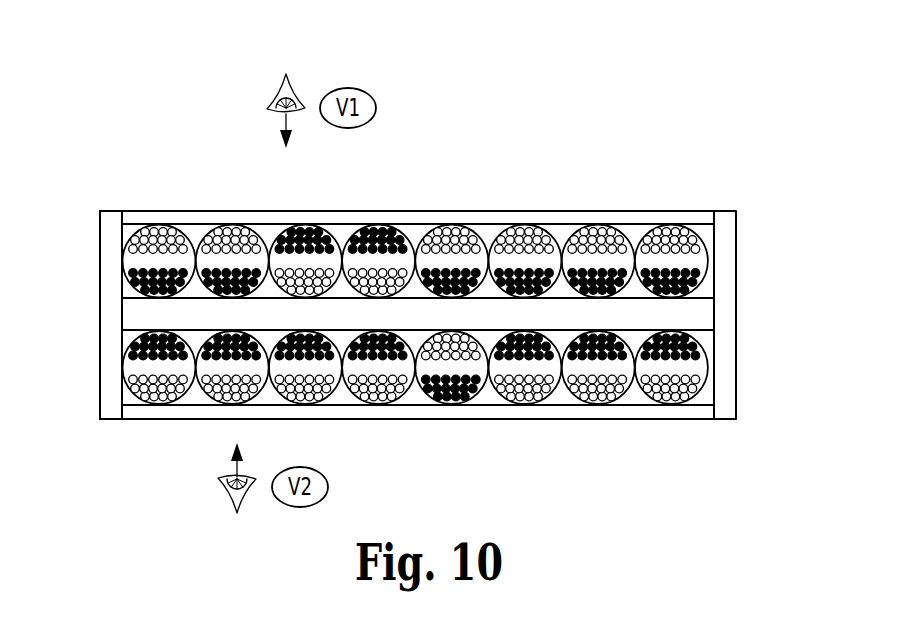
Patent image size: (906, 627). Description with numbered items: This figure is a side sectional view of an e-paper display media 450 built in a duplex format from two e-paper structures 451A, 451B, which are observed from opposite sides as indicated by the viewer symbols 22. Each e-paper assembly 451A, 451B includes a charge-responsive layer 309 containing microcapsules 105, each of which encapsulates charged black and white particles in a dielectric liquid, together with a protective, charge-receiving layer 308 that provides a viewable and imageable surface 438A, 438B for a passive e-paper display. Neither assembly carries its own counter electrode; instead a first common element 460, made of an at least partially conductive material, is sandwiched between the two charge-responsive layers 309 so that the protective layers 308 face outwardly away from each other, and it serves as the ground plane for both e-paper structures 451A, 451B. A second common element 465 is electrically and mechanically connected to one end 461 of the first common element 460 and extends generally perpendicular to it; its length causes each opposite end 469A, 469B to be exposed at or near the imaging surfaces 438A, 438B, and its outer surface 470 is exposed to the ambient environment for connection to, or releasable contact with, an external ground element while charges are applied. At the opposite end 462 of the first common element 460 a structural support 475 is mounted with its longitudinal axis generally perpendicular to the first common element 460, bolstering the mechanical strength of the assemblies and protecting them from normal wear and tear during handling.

The viewer / observer eye 22 is at (297, 92).
The microcapsule 105 is at (642, 392).
The protective, charge-receiving layer 308 is at (553, 217).
The charge-responsive layer 309 is at (707, 262).
The viewable and imageable surface 438A is at (418, 211).
The viewable and imageable surface 438B is at (508, 420).
The e-paper display media 450 is at (95, 178).
The e-paper structure 451A is at (708, 233).
The e-paper structure 451B is at (703, 342).
The first common element 460 is at (690, 317).
The first particles 461 is at (191, 337).
The opposite end 462 is at (683, 307).
The second common element 465 is at (103, 318).
The opposite end 469A is at (114, 211).
The opposite end 469B is at (108, 416).
The outer surface 470 is at (100, 370).
The structural support 475 is at (728, 360).